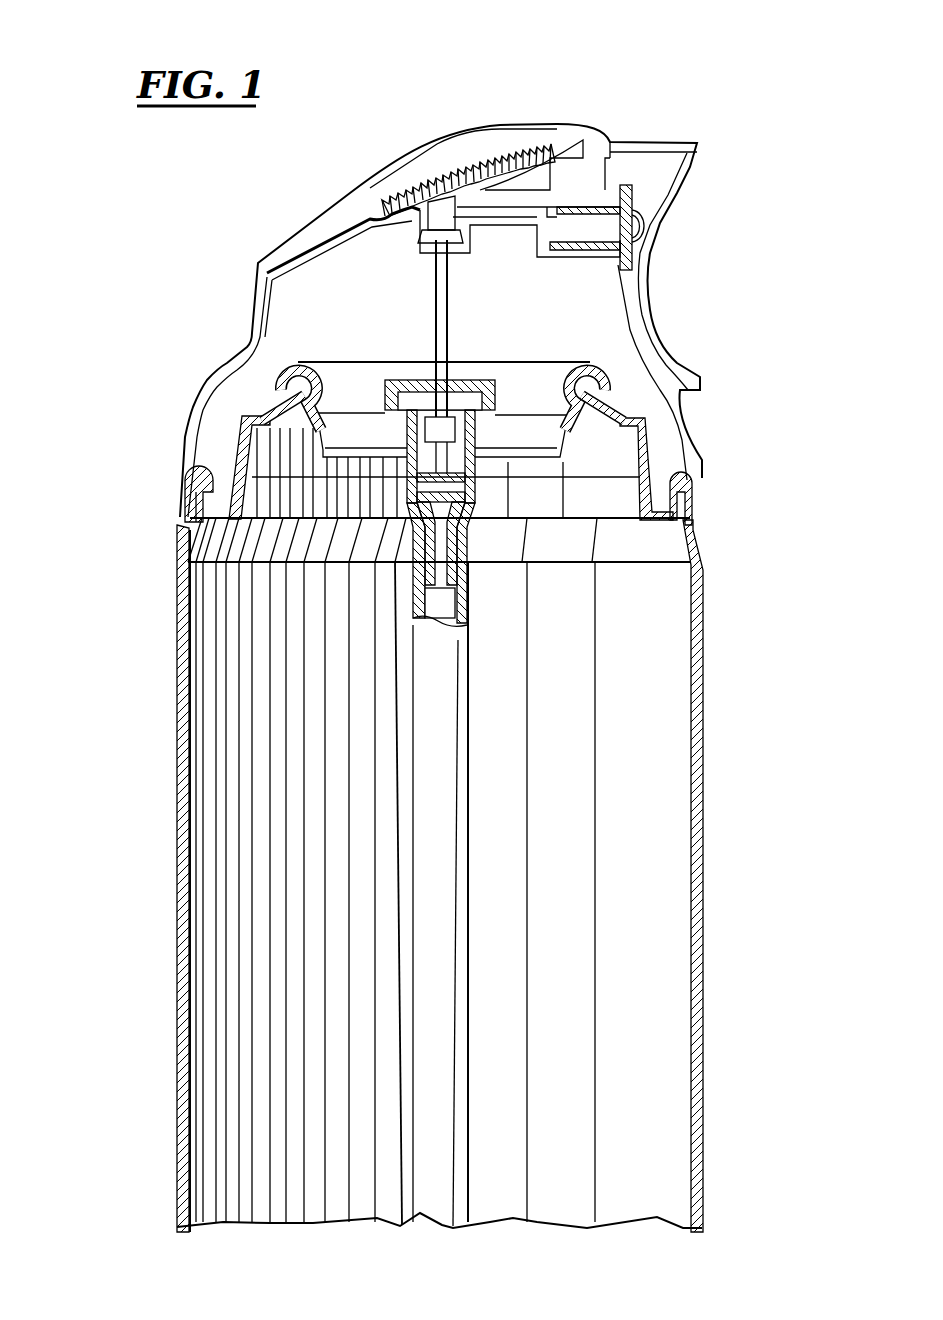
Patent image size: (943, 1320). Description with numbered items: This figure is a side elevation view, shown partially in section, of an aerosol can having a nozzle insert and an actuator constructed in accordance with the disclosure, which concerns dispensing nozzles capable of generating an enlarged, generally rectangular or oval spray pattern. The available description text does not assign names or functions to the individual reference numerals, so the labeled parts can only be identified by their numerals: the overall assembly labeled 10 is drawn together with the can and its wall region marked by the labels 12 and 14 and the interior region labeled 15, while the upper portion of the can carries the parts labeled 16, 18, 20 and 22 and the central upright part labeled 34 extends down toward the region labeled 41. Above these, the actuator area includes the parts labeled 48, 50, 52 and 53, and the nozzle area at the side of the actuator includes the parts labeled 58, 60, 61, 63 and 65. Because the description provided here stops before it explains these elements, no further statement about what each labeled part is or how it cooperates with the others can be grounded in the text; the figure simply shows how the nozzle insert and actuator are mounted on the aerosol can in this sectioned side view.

The dispensing device 10 is at (116, 664).
The container 12 is at (706, 752).
The container wall 14 is at (696, 928).
The container interior 15 is at (568, 988).
The mounting cup 16 is at (655, 430).
The rim bead 18 is at (690, 478).
The valve cup 20 is at (527, 450).
The retaining clip 22 is at (583, 364).
The valve stem 34 is at (436, 300).
The inner sleeve 41 is at (396, 522).
The actuator cap 48 is at (314, 232).
The discharge channel 50 is at (490, 212).
The stem socket 52 is at (414, 254).
The inner wall 53 is at (357, 230).
The nozzle insert 58 is at (537, 207).
The nozzle tip 60 is at (642, 200).
The outlet channel 61 is at (575, 207).
The nozzle flange 63 is at (641, 238).
The return channel 65 is at (580, 250).